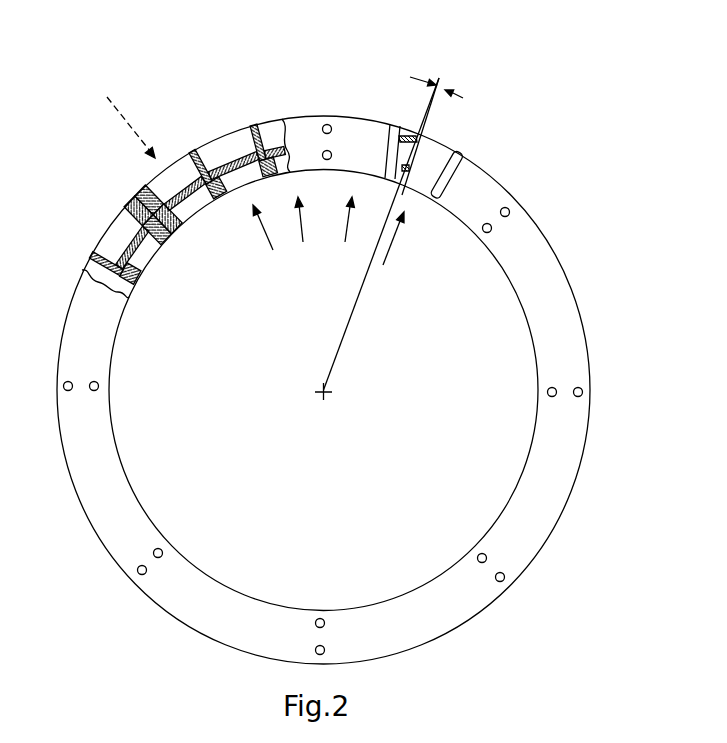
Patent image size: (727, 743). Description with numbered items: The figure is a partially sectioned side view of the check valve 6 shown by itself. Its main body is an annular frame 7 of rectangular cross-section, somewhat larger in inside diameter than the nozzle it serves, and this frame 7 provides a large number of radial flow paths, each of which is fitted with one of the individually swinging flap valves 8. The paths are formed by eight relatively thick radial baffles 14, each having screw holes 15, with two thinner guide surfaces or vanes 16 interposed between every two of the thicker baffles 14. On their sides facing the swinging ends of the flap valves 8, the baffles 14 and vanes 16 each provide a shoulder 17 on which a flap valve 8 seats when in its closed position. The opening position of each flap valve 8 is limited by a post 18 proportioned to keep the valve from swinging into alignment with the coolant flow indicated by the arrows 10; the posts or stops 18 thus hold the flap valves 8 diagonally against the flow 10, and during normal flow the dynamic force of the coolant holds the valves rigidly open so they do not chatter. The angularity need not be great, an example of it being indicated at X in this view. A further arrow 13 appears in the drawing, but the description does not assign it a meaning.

The check valve 6 is at (508, 285).
The annular frame 7 is at (97, 503).
The flap valve 8 is at (143, 246).
The coolant flow arrows 10 is at (273, 250).
The viewing direction arrow 13 is at (128, 118).
The radial baffle 14 is at (170, 228).
The screw hole 15 is at (150, 217).
The guide vane 16 is at (97, 249).
The shoulder 17 is at (252, 178).
The post 18 is at (402, 128).
The flap valve angularity X is at (440, 84).